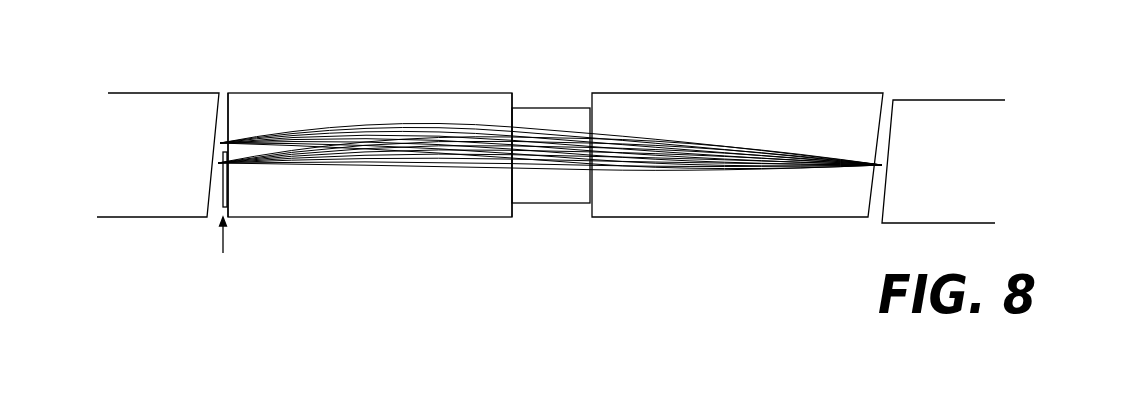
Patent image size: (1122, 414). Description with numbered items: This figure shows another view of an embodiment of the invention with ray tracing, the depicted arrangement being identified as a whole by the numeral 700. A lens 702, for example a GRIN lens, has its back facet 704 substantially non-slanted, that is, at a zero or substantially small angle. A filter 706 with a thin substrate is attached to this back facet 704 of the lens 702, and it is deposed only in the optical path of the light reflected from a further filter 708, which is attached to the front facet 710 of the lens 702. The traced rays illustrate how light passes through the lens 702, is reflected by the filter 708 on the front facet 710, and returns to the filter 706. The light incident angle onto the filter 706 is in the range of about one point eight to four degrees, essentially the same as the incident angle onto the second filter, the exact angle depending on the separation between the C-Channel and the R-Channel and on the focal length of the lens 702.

The optical filter device 700 is at (555, 147).
The lens 702 is at (457, 98).
The back facet 704 is at (228, 115).
The filter 706 is at (227, 195).
The filter 708 is at (562, 192).
The front facet 710 is at (512, 195).